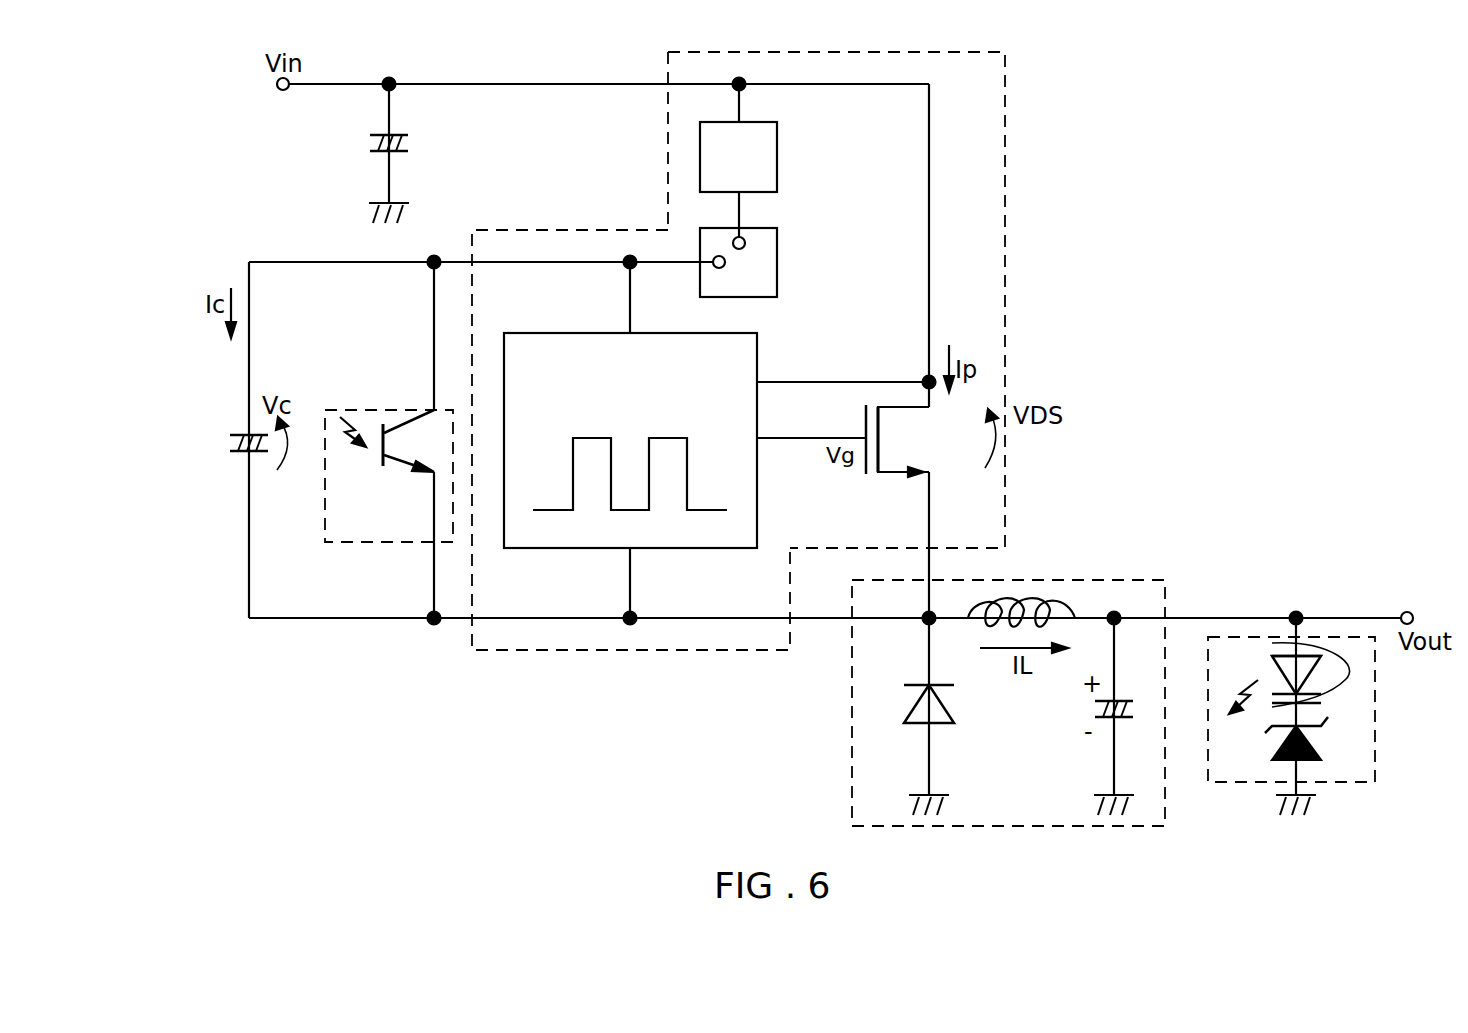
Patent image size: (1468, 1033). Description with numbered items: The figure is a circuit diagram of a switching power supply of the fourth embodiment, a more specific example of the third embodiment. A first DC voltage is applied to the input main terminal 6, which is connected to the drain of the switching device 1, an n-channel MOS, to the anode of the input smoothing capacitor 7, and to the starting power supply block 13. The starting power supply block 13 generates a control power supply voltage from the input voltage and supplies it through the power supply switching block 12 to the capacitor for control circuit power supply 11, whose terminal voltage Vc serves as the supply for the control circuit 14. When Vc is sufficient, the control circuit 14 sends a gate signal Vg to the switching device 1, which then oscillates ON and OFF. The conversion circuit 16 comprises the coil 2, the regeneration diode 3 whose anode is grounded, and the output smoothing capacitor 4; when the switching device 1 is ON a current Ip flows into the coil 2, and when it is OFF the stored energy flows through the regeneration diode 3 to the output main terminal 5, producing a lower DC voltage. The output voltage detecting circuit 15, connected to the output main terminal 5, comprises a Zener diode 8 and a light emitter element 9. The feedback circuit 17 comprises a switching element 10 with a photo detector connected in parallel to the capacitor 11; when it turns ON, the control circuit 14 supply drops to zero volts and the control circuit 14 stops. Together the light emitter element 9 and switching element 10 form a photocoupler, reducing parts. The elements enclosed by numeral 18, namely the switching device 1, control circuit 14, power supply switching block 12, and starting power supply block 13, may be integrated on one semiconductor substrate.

The switching device 1 is at (884, 440).
The coil 2 is at (1075, 606).
The regeneration diode 3 is at (948, 702).
The output smoothing capacitor 4 is at (1095, 710).
The output main terminal 5 is at (1413, 610).
The input main terminal 6 is at (277, 92).
The input smoothing capacitor 7 is at (411, 150).
The Zener diode 8 is at (1318, 740).
The light emitter element 9 is at (1348, 672).
The switching element with a photo detector 10 is at (378, 470).
The capacitor for control circuit power supply 11 is at (231, 446).
The power supply switching block 12 is at (777, 265).
The starting power supply block 13 is at (777, 156).
The control circuit 14 is at (757, 350).
The output voltage detecting circuit 15 is at (1317, 727).
The conversion circuit 16 is at (1090, 580).
The feedback circuit 17 is at (376, 501).
The integrated elements 18 is at (1005, 126).